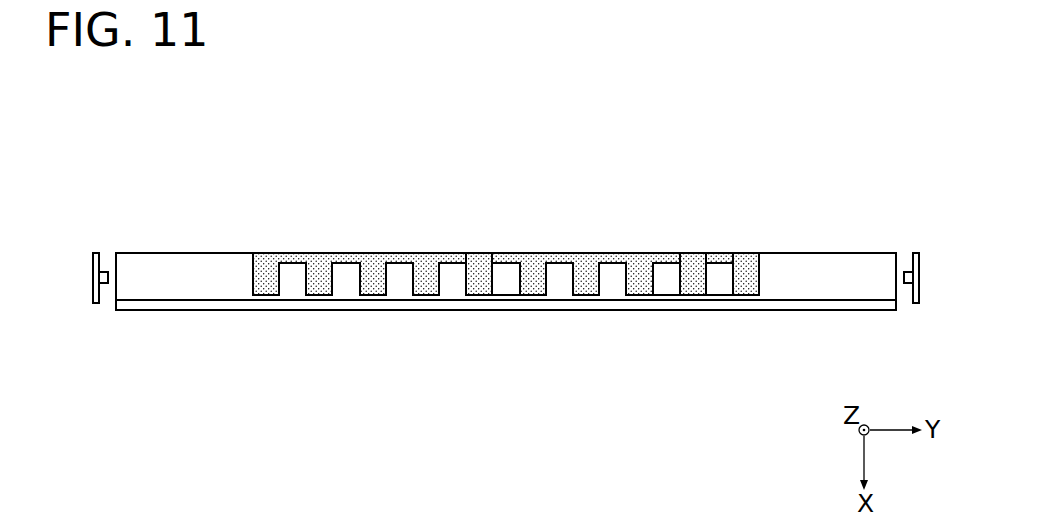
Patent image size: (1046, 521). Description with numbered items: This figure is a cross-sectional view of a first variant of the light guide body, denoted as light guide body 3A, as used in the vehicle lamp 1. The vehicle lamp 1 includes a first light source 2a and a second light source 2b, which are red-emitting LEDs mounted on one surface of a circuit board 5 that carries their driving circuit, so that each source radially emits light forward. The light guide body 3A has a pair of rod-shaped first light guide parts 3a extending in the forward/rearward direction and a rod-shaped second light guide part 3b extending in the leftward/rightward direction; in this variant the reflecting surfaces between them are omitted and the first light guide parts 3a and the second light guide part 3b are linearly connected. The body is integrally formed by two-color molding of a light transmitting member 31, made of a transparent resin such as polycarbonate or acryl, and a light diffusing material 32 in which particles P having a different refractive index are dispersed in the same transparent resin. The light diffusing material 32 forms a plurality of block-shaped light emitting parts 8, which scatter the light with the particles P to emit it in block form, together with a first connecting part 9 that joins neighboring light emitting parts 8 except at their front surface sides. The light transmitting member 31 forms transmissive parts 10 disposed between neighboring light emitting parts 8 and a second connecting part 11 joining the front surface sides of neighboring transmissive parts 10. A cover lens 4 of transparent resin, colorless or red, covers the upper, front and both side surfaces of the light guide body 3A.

The vehicle lamp 1 is at (168, 149).
The first light guide part 3a is at (206, 268).
The second light guide part 3b is at (507, 282).
The light guide body 3A is at (542, 236).
The cover lens 4 is at (418, 308).
The circuit board 5 is at (95, 253).
The first light source 2a is at (93, 277).
The second light source 2b is at (913, 278).
The light emitting part 8 is at (692, 291).
The first connecting part 9 is at (715, 258).
The transmissive part 10 is at (666, 275).
The second connecting part 11 is at (696, 298).
The light transmitting member 31 is at (724, 295).
The light diffusing material 32 is at (714, 276).
The particles P is at (480, 270).